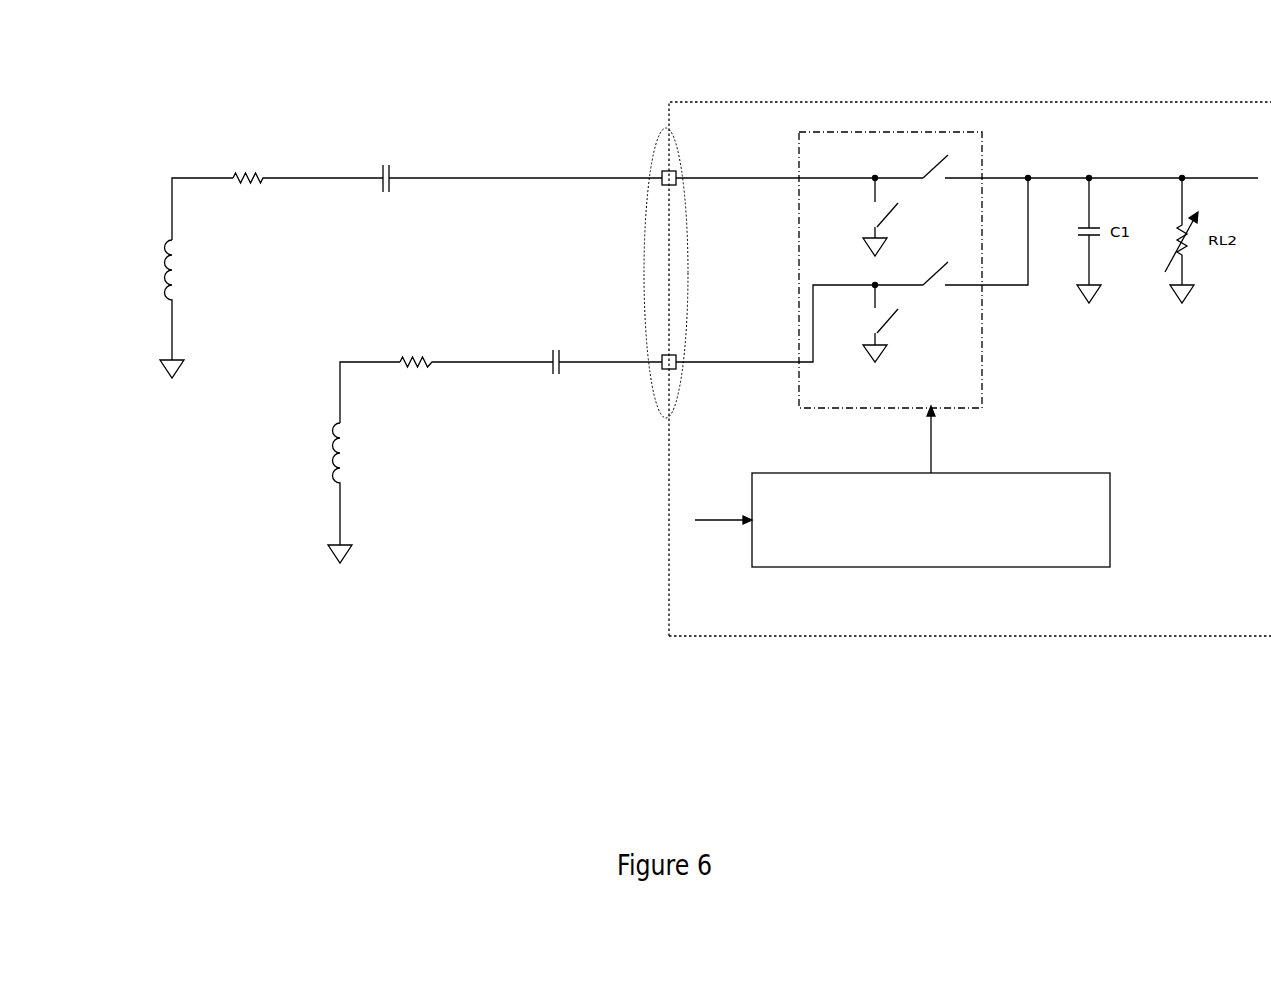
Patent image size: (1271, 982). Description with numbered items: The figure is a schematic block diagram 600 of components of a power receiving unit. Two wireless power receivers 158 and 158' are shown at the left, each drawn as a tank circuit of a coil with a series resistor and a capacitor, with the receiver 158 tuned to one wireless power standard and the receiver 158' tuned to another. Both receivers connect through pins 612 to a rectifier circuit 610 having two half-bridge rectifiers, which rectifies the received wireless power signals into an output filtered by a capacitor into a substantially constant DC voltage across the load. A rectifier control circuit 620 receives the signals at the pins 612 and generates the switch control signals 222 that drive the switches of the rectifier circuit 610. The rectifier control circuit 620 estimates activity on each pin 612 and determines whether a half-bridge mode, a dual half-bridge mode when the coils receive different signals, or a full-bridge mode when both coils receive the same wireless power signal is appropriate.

The schematic block diagram 600 is at (102, 58).
The wireless power receiver 158 is at (389, 260).
The wireless power receiver 158' is at (479, 445).
The pins 612 is at (652, 400).
The rectifier circuit 610 is at (967, 270).
The rectifier control circuit 620 is at (892, 522).
The switch control signals 222 is at (960, 437).